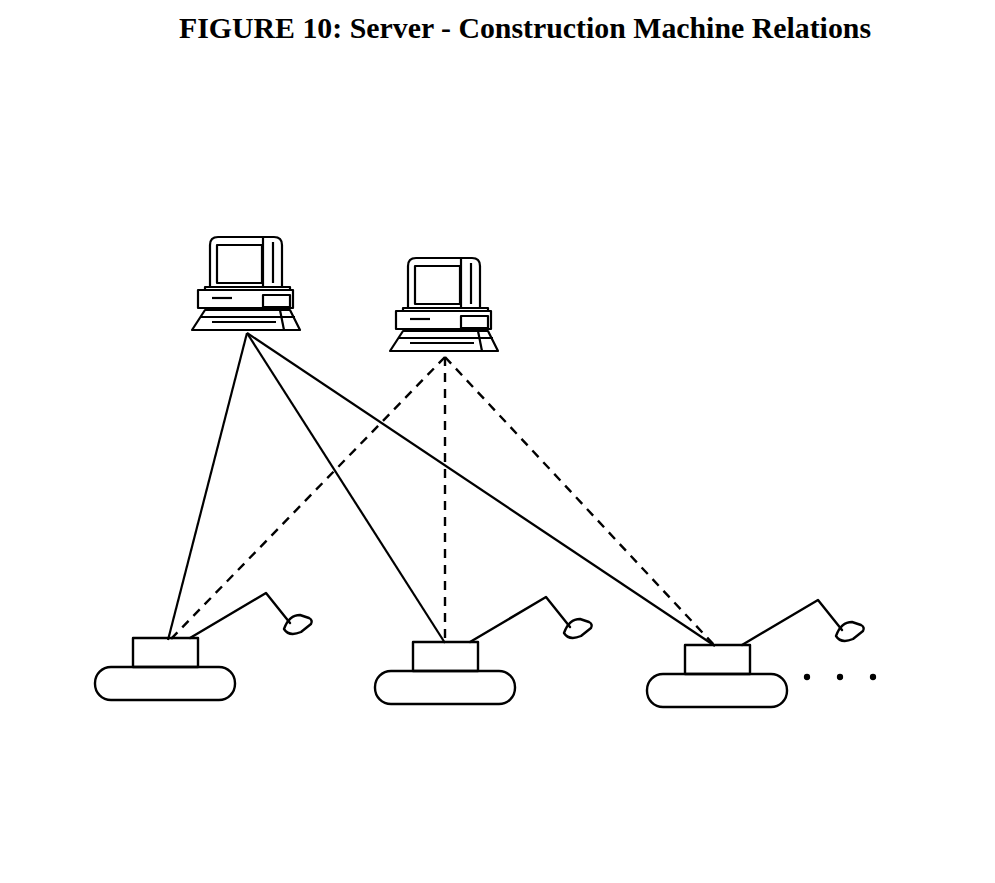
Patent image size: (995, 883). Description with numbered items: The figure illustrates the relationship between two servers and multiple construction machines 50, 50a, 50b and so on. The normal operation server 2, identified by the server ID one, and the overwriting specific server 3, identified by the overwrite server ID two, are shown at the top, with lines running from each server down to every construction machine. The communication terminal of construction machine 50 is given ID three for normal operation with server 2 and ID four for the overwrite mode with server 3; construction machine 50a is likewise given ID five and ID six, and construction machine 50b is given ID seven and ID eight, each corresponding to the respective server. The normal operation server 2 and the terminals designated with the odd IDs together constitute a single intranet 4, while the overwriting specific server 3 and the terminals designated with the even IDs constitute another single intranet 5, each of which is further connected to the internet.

The normal operation server 2 is at (486, 286).
The overwriting specific server 3 is at (207, 265).
The intranet 4 is at (555, 453).
The intranet 5 is at (178, 467).
The construction machine 50 is at (168, 656).
The construction machine 50a is at (448, 670).
The construction machine 50b is at (735, 675).